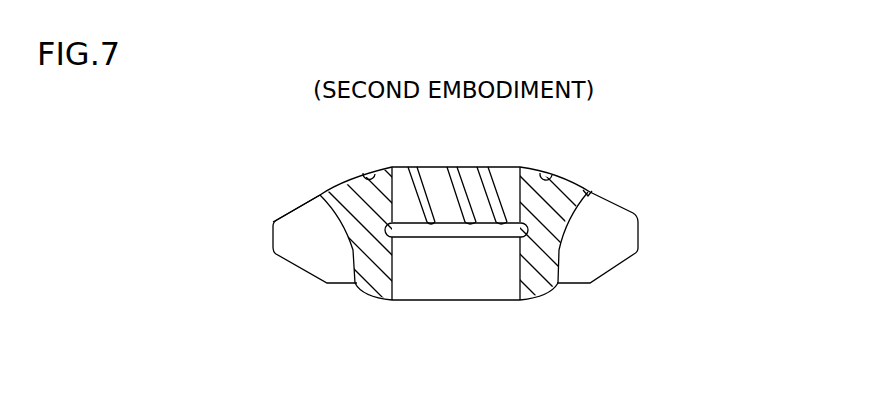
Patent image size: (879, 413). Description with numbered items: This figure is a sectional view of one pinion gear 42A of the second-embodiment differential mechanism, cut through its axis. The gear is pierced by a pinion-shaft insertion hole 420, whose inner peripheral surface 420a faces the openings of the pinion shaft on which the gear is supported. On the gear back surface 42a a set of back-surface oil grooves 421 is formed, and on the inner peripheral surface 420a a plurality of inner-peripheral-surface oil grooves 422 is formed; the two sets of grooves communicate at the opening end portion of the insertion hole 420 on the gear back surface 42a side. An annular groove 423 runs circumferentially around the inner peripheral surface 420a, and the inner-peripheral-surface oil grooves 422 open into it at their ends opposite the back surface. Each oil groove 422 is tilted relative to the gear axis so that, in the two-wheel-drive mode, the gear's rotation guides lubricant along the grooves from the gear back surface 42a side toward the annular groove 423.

The gear back surface 42a is at (345, 178).
The pinion gear 42A is at (610, 201).
The pinion-shaft insertion hole 420 is at (448, 299).
The inner peripheral surface 420a is at (407, 280).
The back-surface oil grooves 421 is at (369, 170).
The inner-peripheral-surface oil grooves 422 is at (489, 183).
The annular groove 423 is at (478, 230).